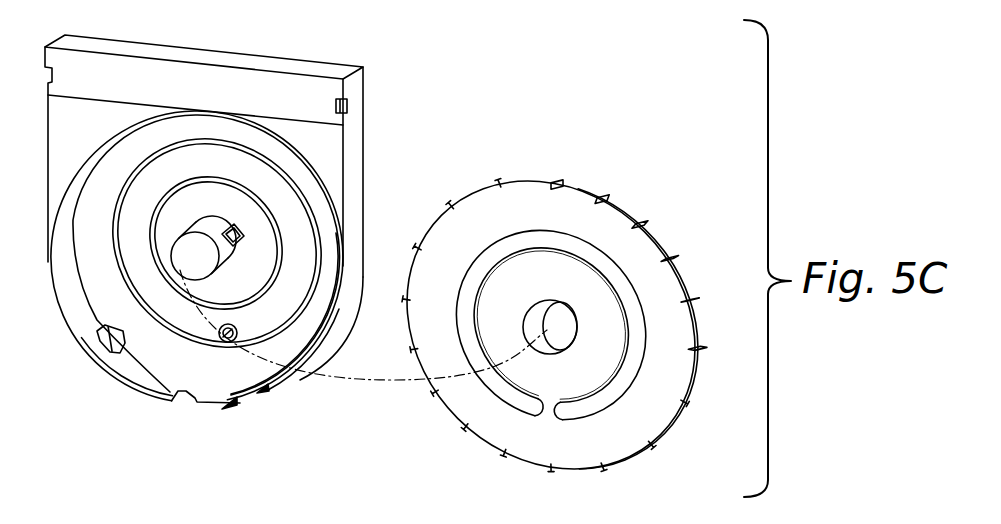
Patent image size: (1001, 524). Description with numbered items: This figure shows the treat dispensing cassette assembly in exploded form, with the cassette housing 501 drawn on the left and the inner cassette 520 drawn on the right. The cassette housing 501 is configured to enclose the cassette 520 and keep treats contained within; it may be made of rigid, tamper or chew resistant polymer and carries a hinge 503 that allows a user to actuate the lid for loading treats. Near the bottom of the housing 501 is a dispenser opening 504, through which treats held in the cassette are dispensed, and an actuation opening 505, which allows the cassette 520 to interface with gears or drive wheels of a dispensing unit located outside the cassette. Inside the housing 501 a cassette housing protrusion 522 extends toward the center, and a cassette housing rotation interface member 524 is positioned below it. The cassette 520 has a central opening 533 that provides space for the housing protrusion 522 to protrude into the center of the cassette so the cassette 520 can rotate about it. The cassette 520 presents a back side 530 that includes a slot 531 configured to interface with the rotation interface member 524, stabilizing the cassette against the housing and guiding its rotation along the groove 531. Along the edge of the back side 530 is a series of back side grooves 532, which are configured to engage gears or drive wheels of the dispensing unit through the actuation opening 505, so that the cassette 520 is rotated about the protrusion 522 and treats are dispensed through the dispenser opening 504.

The cassette housing 501 is at (292, 68).
The hinge 503 is at (357, 121).
The dispenser opening 504 is at (205, 407).
The actuation opening 505 is at (290, 377).
The inner cassette 520 is at (551, 309).
The cassette housing protrusion 522 is at (180, 259).
The cassette housing rotation interface member 524 is at (222, 340).
The back side 530 is at (623, 430).
The slot 531 is at (633, 362).
The back side grooves 532 is at (660, 230).
The opening 533 is at (550, 343).